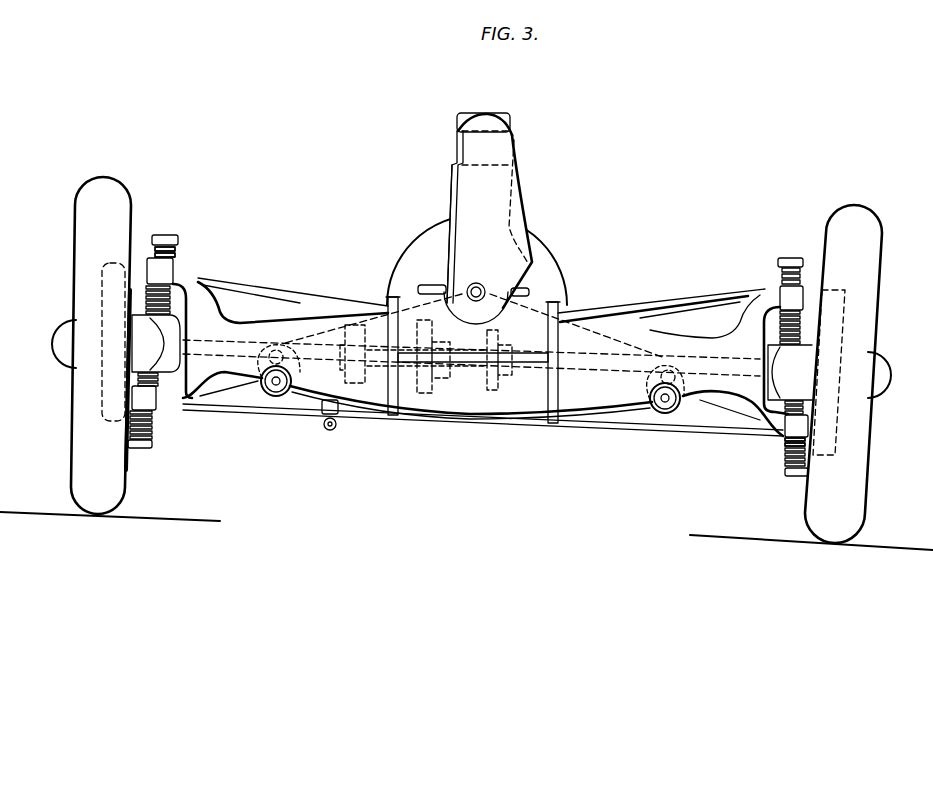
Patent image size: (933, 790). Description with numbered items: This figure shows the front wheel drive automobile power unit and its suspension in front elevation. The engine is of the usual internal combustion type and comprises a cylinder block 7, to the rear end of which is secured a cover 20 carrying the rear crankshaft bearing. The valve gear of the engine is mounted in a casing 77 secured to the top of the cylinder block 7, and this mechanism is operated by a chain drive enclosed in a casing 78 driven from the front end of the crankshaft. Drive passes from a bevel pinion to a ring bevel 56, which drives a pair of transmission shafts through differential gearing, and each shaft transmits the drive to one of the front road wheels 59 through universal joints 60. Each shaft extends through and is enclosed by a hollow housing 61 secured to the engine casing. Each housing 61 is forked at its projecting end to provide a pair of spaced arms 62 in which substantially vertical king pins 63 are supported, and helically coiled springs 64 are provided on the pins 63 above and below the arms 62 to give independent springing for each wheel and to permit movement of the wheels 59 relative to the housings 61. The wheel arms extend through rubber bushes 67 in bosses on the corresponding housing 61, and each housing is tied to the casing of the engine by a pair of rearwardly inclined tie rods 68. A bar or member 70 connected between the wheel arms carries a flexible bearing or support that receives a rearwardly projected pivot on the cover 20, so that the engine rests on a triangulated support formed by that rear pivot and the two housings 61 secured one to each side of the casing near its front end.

The cylinder block 7 is at (447, 192).
The cover 20 is at (552, 264).
The ring bevel 56 is at (425, 385).
The front road wheels 59 is at (85, 437).
The universal joints 60 is at (156, 358).
The hollow housing 61 is at (294, 322).
The spaced arms 62 is at (192, 282).
The king pins 63 is at (172, 259).
The helically coiled springs 64 is at (165, 303).
The rubber bushes 67 is at (276, 398).
The tie rods 68 is at (249, 292).
The bar or member 70 is at (338, 340).
The casing 77 is at (487, 118).
The casing 78 is at (489, 197).